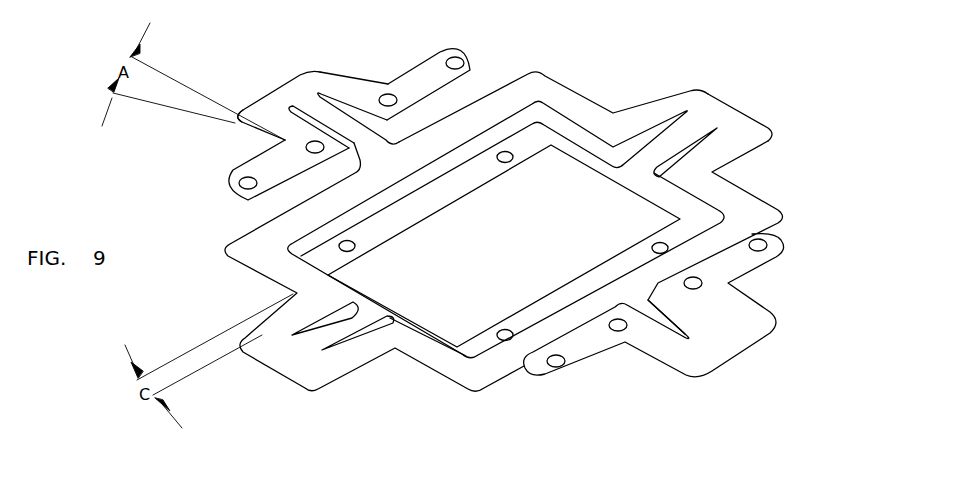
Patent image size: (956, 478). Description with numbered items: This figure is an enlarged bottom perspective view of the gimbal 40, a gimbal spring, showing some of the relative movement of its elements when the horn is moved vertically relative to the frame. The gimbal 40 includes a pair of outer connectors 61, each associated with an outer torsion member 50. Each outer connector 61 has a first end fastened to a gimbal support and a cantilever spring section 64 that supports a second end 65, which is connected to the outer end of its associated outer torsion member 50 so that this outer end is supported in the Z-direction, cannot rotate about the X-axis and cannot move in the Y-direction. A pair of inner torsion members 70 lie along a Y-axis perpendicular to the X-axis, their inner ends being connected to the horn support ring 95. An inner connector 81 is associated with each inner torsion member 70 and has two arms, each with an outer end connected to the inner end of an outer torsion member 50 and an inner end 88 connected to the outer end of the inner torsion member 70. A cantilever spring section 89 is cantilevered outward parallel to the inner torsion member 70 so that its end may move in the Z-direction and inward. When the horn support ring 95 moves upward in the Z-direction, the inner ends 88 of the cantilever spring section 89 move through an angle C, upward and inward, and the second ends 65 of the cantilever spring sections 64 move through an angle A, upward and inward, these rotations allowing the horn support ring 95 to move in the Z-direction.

The gimbal 40 is at (793, 149).
The outer torsion member 50 is at (316, 112).
The outer connector 61 is at (287, 80).
The cantilever spring section 64 is at (372, 88).
The second end 65 is at (326, 76).
The inner torsion member 70 is at (690, 128).
The inner connector 81 is at (576, 104).
The inner end 88 is at (690, 97).
The cantilever spring section 89 is at (645, 104).
The horn support ring 95 is at (448, 204).